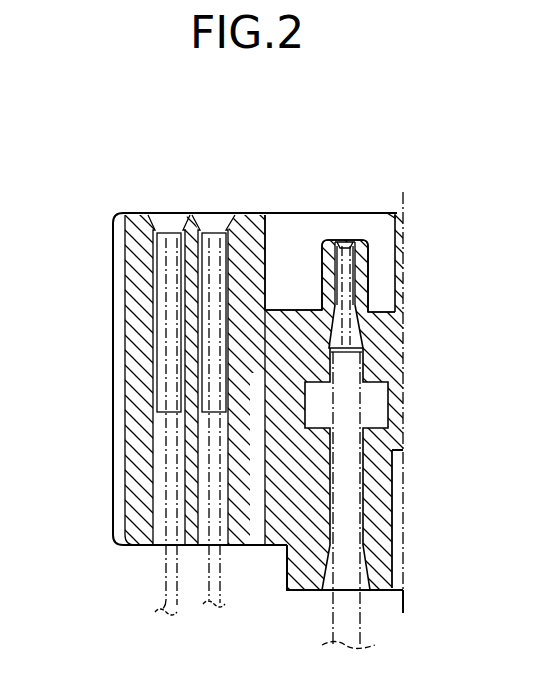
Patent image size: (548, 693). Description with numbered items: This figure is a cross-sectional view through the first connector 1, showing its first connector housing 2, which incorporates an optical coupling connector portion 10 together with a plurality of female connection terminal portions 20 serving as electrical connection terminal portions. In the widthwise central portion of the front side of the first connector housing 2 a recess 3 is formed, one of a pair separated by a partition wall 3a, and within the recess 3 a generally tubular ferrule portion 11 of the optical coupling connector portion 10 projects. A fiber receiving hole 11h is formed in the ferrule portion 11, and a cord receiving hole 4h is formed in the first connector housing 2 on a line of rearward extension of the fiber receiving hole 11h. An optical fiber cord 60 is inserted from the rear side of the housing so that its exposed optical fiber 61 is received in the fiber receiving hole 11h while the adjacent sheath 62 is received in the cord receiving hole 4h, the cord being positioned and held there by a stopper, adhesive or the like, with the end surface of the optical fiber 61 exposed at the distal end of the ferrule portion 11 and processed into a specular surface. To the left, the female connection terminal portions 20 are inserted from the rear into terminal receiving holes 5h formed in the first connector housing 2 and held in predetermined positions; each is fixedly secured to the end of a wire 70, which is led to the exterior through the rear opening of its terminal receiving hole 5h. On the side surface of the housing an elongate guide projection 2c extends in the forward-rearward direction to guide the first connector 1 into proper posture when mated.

The first connector 1 is at (292, 150).
The first connector housing 2 is at (283, 568).
The elongate guide projection 2c is at (114, 437).
The recess 3 is at (268, 213).
The partition wall 3a is at (391, 212).
The cord receiving hole 4h is at (352, 491).
The terminal receiving hole 5h is at (198, 312).
The optical coupling connector portion 10 is at (356, 238).
The ferrule portion 11 is at (327, 240).
The fiber receiving hole 11h is at (340, 290).
The female connection terminal portion 20 is at (208, 345).
The optical fiber cord 60 is at (362, 612).
The optical fiber 61 is at (378, 266).
The sheath 62 is at (392, 372).
The wire 70 is at (163, 607).